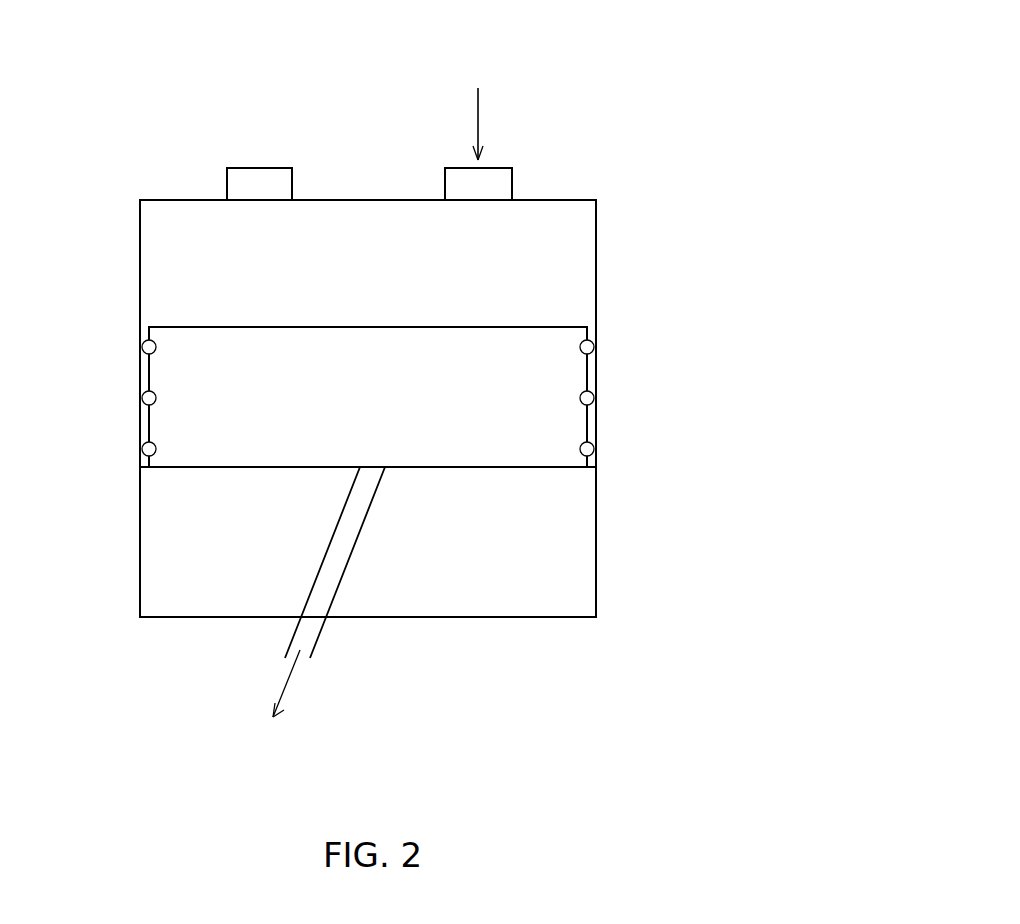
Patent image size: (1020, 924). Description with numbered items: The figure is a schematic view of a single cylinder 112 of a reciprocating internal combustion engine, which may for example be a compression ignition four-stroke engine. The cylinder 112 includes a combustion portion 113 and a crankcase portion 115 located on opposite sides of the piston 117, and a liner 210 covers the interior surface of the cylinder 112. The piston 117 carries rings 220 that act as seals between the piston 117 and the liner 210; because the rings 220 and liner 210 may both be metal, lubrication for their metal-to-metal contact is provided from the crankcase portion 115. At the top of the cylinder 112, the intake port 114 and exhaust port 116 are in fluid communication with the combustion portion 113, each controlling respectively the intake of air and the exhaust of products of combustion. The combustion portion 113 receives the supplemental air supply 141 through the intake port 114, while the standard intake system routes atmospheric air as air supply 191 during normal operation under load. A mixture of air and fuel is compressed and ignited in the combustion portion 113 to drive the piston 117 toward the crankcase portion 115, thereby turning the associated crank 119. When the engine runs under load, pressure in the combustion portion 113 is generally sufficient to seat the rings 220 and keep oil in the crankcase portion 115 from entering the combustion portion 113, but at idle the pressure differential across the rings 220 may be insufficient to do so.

The cylinder 112 is at (572, 48).
The combustion portion 113 is at (523, 240).
The intake port 114 is at (512, 186).
The crankcase portion 115 is at (523, 537).
The exhaust port 116 is at (292, 183).
The piston 117 is at (239, 467).
The crank 119 is at (314, 608).
The supplemental air supply 141 is at (478, 108).
The air supply 191 is at (499, 145).
The liner 210 is at (140, 262).
The rings 220 is at (146, 346).